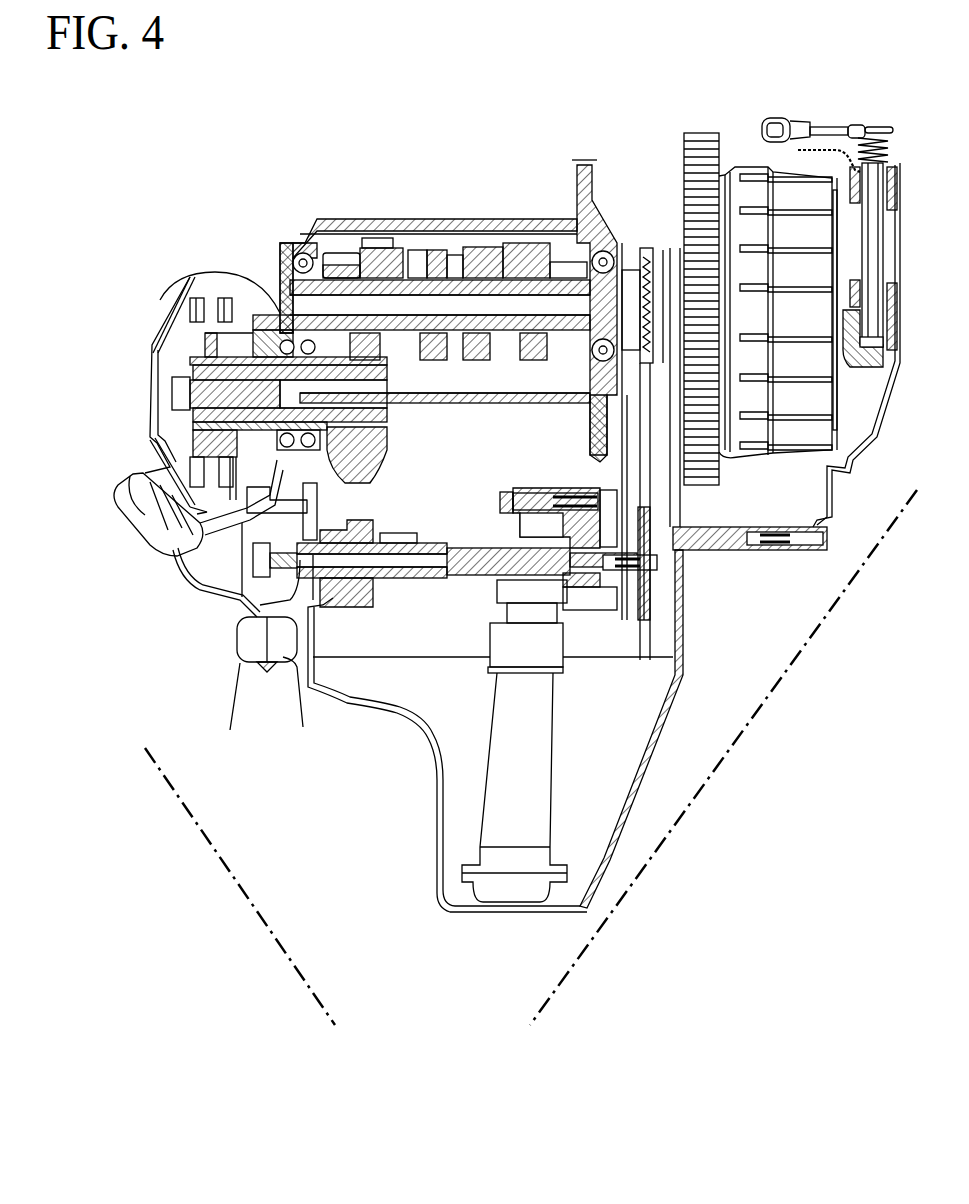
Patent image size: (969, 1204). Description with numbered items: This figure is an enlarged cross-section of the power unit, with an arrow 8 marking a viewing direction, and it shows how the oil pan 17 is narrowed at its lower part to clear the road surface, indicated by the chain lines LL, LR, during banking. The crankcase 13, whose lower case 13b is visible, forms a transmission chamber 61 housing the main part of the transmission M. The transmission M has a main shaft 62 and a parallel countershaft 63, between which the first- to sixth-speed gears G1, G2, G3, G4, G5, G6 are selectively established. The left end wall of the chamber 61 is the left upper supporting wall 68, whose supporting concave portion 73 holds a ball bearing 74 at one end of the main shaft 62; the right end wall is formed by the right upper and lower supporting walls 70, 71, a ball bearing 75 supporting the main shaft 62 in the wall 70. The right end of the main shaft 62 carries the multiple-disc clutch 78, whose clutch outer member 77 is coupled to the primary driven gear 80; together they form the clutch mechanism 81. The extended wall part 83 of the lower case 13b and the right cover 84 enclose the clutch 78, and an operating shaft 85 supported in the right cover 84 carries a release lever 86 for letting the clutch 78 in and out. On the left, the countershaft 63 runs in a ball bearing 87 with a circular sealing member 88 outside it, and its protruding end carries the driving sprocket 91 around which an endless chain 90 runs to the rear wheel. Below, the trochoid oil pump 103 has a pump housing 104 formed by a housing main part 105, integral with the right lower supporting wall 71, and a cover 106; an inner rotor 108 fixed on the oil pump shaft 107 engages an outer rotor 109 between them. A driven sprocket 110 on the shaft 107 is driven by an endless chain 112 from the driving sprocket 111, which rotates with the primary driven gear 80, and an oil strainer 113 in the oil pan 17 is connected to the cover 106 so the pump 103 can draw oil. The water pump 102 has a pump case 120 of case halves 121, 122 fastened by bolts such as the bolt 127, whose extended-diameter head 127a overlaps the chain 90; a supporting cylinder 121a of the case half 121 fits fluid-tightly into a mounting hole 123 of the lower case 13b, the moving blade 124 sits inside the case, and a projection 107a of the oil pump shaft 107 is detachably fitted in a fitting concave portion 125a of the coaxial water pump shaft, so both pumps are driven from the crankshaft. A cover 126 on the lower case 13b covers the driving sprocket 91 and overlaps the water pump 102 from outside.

The section arrow 8 is at (140, 397).
The crankcase 13 is at (700, 587).
The lower case 13b is at (683, 625).
The oil pan 17 is at (395, 717).
The transmission chamber 61 is at (512, 240).
The main shaft 62 is at (428, 250).
The countershaft 63 is at (380, 405).
The left upper supporting wall 68 is at (278, 300).
The right upper supporting wall 70 is at (598, 240).
The right lower supporting wall 71 is at (625, 258).
The supporting concave portion 73 is at (282, 248).
The ball bearing 74 is at (303, 251).
The ball bearing 75 is at (590, 355).
The clutch outer member 77 is at (750, 455).
The clutch 78 is at (752, 160).
The primary driven gear 80 is at (700, 133).
The clutch mechanism 81 is at (748, 46).
The extended wall part 83 is at (740, 550).
The right cover 84 is at (865, 440).
The operating shaft 85 is at (877, 352).
The release lever 86 is at (832, 130).
The ball bearing 87 is at (320, 396).
The circular sealing member 88 is at (235, 322).
The endless chain 90 is at (200, 320).
The driving sprocket 91 is at (205, 333).
The water pump 102 is at (232, 643).
The oil pump 103 is at (573, 625).
The pump housing 104 is at (448, 484).
The housing main part 105 is at (525, 490).
The cover 106 is at (515, 530).
The oil pump shaft 107 is at (462, 575).
The projection 107a is at (424, 575).
The inner rotor 108 is at (620, 545).
The outer rotor 109 is at (595, 615).
The driven sprocket for a pump 110 is at (683, 615).
The driving sprocket for a pump 111 is at (667, 373).
The endless chain 112 is at (650, 625).
The oil strainer 113 is at (545, 800).
The pump case 120 is at (328, 750).
The case half 121 is at (297, 706).
The supporting cylinder 121a is at (355, 600).
The case half 122 is at (225, 709).
The mounting hole 123 is at (362, 590).
The moving blade 124 is at (257, 604).
The fitting concave portion 125a is at (432, 548).
The cover 126 is at (182, 295).
The bolt 127 is at (280, 508).
The extended-diameter head 127a is at (330, 485).
The first-speed gear G1 is at (565, 262).
The second-speed gear G2 is at (341, 248).
The third-speed gear G3 is at (440, 250).
The fourth-speed gear G4 is at (478, 368).
The fifth-speed gear G5 is at (535, 368).
The sixth-speed gear G6 is at (382, 240).
The transmission M is at (497, 243).
The chain line LL is at (247, 890).
The chain line LR is at (655, 855).